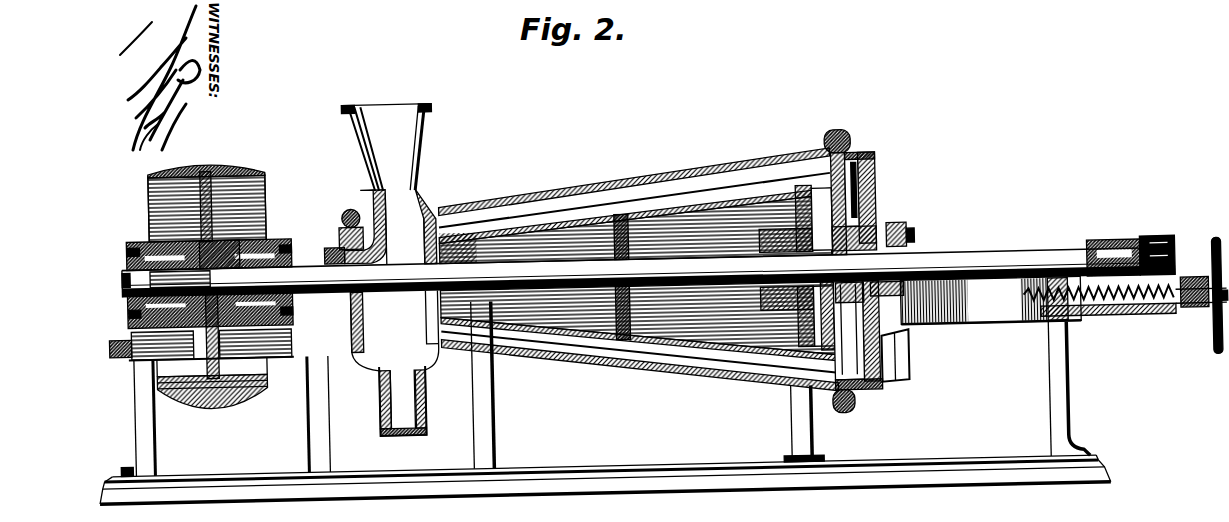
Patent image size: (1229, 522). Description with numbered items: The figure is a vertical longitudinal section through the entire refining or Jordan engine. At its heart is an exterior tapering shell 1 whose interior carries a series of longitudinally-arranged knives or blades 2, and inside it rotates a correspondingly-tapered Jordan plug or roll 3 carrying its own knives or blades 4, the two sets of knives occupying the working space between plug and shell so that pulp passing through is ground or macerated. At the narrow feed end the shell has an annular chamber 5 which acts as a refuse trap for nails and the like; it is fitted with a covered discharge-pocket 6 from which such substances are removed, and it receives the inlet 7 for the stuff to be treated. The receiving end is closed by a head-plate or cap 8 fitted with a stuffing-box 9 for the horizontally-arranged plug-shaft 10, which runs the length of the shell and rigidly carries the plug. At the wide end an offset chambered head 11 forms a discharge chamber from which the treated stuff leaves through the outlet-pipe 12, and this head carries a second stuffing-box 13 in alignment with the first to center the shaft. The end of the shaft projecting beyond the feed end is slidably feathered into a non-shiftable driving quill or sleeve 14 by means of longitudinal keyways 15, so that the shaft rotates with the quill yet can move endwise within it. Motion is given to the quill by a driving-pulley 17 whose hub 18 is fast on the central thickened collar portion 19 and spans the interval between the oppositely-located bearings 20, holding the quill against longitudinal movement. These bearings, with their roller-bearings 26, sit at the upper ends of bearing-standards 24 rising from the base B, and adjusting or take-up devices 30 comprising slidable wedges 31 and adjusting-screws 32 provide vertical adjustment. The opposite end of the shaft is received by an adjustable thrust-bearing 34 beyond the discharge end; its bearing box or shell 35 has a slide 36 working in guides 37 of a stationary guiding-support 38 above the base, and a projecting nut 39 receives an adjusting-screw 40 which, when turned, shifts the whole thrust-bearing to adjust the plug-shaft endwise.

The exterior tapering shell 1 is at (653, 172).
The knives or blades 2 is at (737, 165).
The Jordan plug or roll 3 is at (638, 277).
The knives or blades 4 is at (556, 215).
The annular chamber 5 is at (440, 200).
The discharge-pocket 6 is at (425, 381).
The inlet 7 is at (420, 128).
The head-plate or cap 8 is at (338, 235).
The stuffing-box 9 is at (263, 332).
The plug-shaft 10 is at (648, 272).
The offset chambered head 11 is at (880, 163).
The outlet-pipe 12 is at (901, 388).
The stuffing-box 13 is at (914, 243).
The driving quill or sleeve 14 is at (232, 237).
The keyways 15 is at (130, 281).
The driving-pulley 17 is at (233, 161).
The hub 18 is at (192, 231).
The central thickened collar portion 19 is at (180, 287).
The bearings 20 is at (325, 247).
The bearing-standards 24 is at (153, 429).
The roller-bearings 26 is at (150, 235).
The adjusting or take-up devices 30 is at (125, 355).
The wedges 31 is at (300, 334).
The adjusting-screws 32 is at (278, 362).
The adjustable thrust-bearing 34 is at (1117, 251).
The bearing box or shell 35 is at (1145, 250).
The slide 36 is at (1101, 322).
The guides 37 is at (998, 333).
The stationary guiding-support 38 is at (1167, 331).
The projecting nut 39 is at (1095, 331).
The adjusting-screw 40 is at (1204, 295).
The base B is at (632, 465).